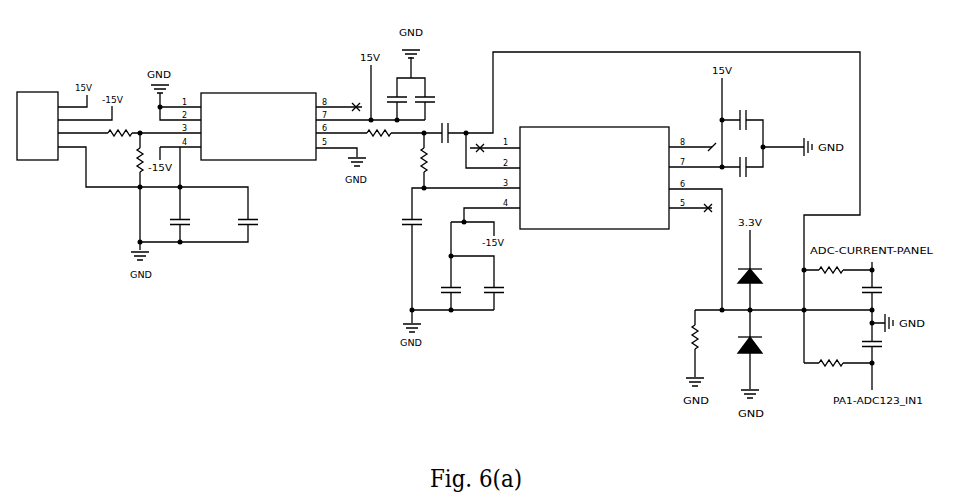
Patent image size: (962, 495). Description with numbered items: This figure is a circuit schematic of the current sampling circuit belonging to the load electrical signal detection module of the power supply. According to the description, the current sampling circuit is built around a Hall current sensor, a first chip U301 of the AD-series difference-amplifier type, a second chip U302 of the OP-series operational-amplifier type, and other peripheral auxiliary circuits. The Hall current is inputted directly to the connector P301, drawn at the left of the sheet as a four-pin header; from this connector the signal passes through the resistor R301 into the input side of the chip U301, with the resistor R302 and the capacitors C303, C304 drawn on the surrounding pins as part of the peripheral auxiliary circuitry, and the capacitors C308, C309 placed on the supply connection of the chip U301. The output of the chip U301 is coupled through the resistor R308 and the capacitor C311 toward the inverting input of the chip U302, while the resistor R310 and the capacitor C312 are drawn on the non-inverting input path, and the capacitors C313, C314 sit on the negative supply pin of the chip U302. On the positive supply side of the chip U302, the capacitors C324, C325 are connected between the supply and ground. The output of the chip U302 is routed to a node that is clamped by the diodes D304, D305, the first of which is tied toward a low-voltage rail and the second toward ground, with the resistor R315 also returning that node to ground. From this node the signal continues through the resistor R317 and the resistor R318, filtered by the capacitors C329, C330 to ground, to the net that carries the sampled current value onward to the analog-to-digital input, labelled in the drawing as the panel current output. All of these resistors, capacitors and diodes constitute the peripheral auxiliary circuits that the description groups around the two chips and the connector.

The connector P301 is at (38, 126).
The chip U301 is at (258, 127).
The chip U302 is at (594, 177).
The resistor R301 is at (122, 129).
The resistor R302 is at (128, 160).
The resistor R308 is at (374, 138).
The resistor R310 is at (412, 160).
The resistor R315 is at (677, 337).
The resistor R317 is at (830, 265).
The resistor R318 is at (830, 358).
The capacitor C303 is at (193, 222).
The capacitor C304 is at (261, 222).
The capacitor C308 is at (404, 92).
The capacitor C309 is at (433, 92).
The capacitor C311 is at (459, 133).
The capacitor 1nF C312 is at (426, 229).
The capacitor C313 is at (443, 283).
The capacitor C314 is at (485, 283).
The capacitor C324 is at (750, 105).
The capacitor C325 is at (747, 160).
The capacitor C329 is at (886, 291).
The capacitor C330 is at (886, 345).
The diode D304 is at (763, 271).
The diode D305 is at (763, 339).